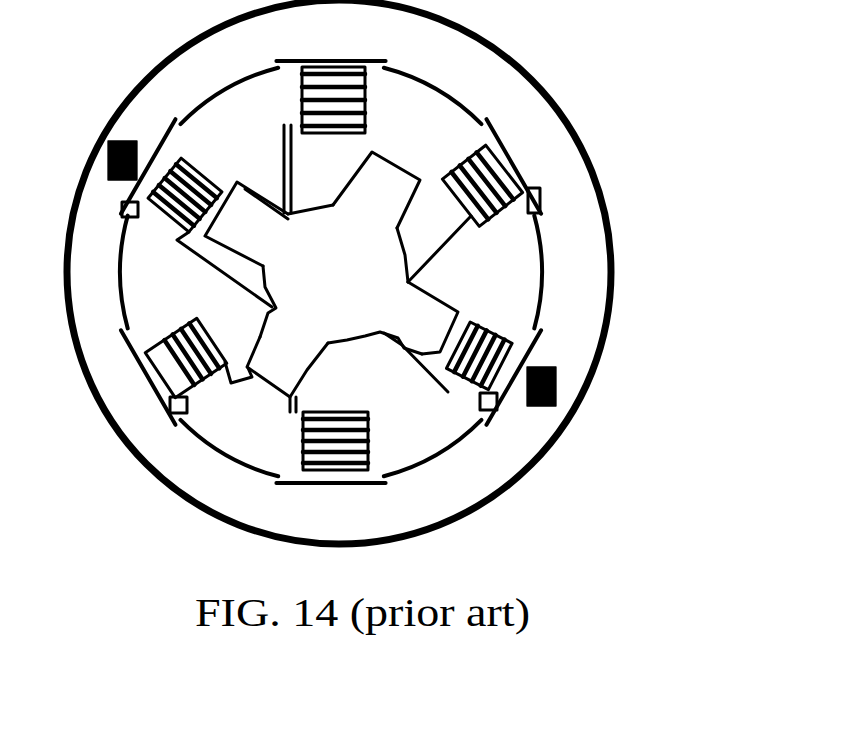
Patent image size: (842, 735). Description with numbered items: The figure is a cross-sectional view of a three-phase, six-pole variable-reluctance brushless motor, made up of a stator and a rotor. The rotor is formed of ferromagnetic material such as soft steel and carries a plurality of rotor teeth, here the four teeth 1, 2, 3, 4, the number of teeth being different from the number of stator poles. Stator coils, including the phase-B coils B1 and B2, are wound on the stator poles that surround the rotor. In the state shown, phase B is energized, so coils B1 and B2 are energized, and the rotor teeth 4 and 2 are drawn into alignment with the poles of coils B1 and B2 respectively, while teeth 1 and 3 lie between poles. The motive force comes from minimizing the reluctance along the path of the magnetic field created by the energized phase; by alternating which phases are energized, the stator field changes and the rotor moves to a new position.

The rotor tooth 1 is at (376, 190).
The rotor tooth 2 is at (433, 318).
The rotor tooth 3 is at (287, 367).
The rotor tooth 4 is at (246, 224).
The element rotor is at (341, 279).
The coil B1 is at (190, 176).
The coil B2 is at (482, 340).
The rotor teeth is at (446, 289).